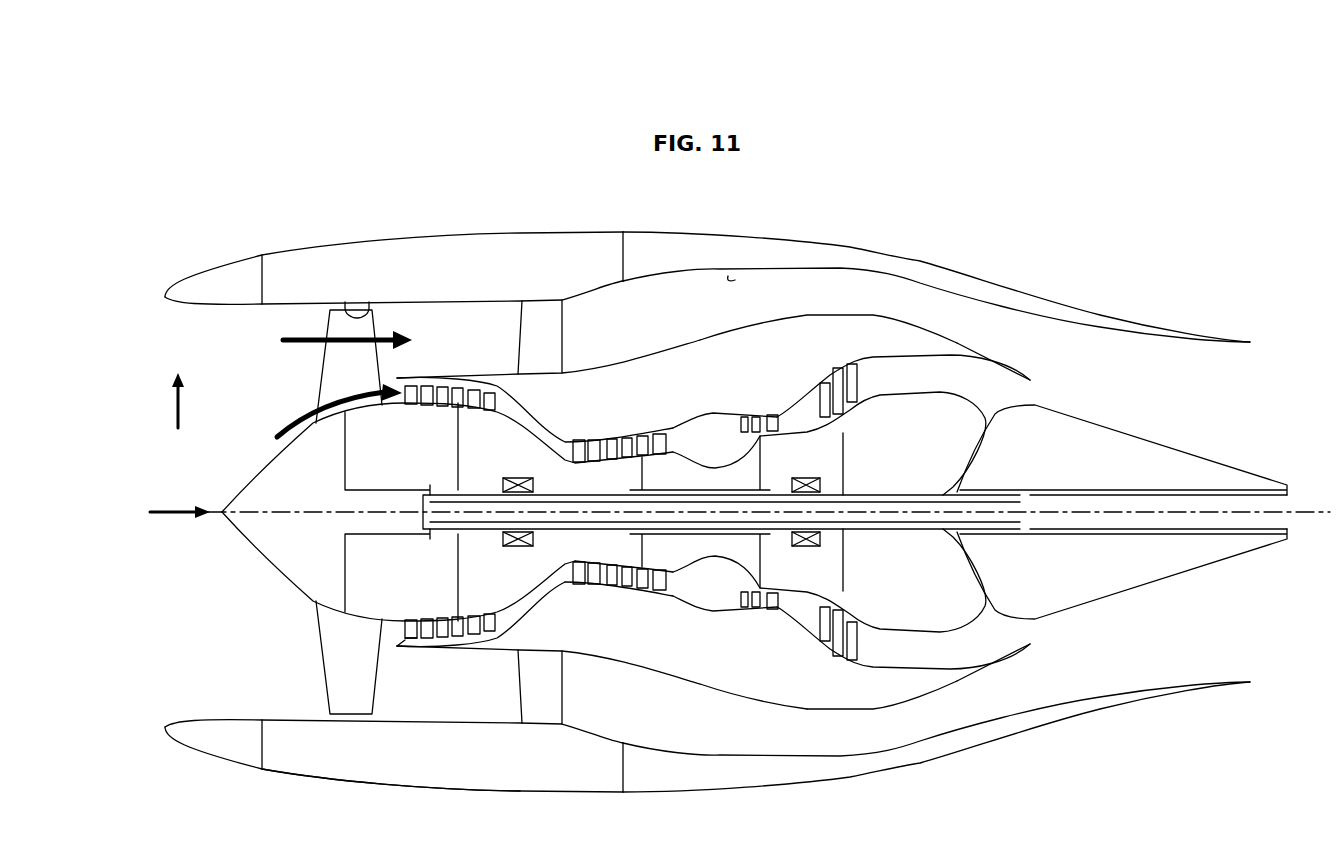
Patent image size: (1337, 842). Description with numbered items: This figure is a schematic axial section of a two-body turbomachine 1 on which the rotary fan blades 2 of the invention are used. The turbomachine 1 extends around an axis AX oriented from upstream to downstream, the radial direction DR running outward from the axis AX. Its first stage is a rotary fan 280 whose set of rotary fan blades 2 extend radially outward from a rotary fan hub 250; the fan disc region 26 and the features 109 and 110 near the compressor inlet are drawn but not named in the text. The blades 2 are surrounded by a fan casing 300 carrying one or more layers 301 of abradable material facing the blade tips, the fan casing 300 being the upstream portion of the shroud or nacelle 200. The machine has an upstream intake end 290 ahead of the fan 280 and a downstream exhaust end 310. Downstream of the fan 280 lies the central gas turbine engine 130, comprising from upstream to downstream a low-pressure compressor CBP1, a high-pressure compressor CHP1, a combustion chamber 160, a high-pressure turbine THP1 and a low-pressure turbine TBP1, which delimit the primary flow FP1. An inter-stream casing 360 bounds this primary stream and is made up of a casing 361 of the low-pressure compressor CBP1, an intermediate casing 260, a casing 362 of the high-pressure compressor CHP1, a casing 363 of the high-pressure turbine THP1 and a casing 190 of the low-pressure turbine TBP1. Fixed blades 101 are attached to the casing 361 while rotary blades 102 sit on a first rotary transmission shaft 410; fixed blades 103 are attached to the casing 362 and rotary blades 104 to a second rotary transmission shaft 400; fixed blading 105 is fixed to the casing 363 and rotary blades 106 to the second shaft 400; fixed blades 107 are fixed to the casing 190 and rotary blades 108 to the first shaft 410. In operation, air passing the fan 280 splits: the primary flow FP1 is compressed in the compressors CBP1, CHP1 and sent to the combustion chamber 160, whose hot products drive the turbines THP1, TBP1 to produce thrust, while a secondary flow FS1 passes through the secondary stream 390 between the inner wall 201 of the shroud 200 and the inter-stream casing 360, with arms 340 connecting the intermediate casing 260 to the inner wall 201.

The turbomachine 1 is at (941, 180).
The rotary fan blade 2 is at (342, 375).
The fan disc 26 is at (337, 433).
The fixed blades of the low-pressure compressor 101 is at (445, 640).
The rotary blades of the low-pressure compressor 102 is at (405, 630).
The fixed blades of the high-pressure compressor 103 is at (605, 585).
The rotary blades of the high-pressure compressor 104 is at (640, 582).
The fixed blading of the high-pressure turbine 105 is at (746, 600).
The rotary blades of the high-pressure turbine 106 is at (770, 608).
The fixed blades of the low-pressure turbine 107 is at (835, 640).
The rotary blades of the low-pressure turbine 108 is at (820, 620).
The splitter lip 109 is at (407, 623).
The compressor inlet 110 is at (408, 642).
The central gas turbine engine 130 is at (1022, 345).
The combustion chamber 160 is at (707, 407).
The casing of the low-pressure turbine 190 is at (826, 691).
The shroud or nacelle 200 is at (652, 260).
The inner wall of the shroud 201 is at (729, 276).
The rotary fan hub 250 is at (268, 546).
The intermediate casing 260 is at (534, 636).
The rotary fan 280 is at (327, 372).
The upstream intake end 290 is at (215, 632).
The fan casing 300 is at (434, 276).
The layer of abradable material 301 is at (370, 316).
The downstream exhaust end 310 is at (1222, 405).
The arms 340 is at (526, 342).
The inter-stream casing 360 is at (656, 400).
The casing of the low-pressure compressor 361 is at (478, 645).
The casing of the high-pressure compressor 362 is at (608, 626).
The casing of the high-pressure turbine 363 is at (762, 667).
The secondary stream 390 is at (584, 342).
The second rotary transmission shaft 400 is at (690, 490).
The first rotary transmission shaft 410 is at (889, 523).
The axis AX is at (172, 508).
The radial direction DR is at (172, 410).
The secondary flow FS1 is at (280, 333).
The primary flow FP1 is at (290, 420).
The low-pressure compressor CBP1 is at (468, 370).
The high-pressure compressor CHP1 is at (625, 418).
The high-pressure turbine THP1 is at (757, 402).
The low-pressure turbine TBP1 is at (836, 346).